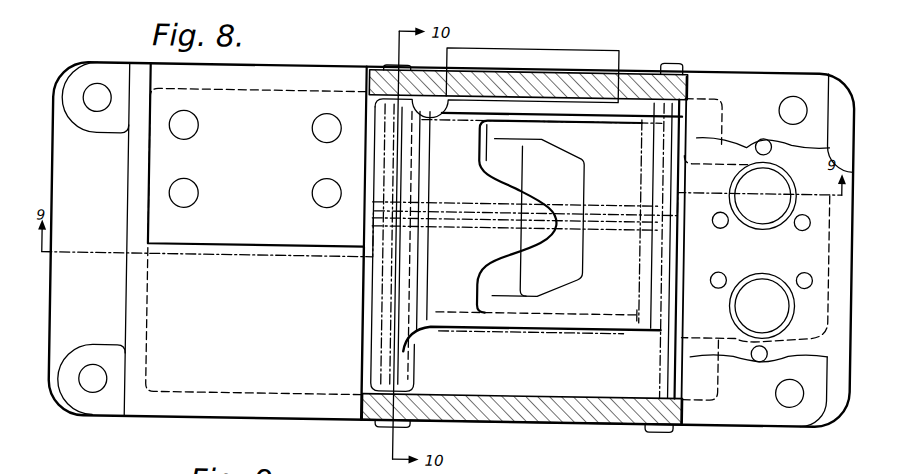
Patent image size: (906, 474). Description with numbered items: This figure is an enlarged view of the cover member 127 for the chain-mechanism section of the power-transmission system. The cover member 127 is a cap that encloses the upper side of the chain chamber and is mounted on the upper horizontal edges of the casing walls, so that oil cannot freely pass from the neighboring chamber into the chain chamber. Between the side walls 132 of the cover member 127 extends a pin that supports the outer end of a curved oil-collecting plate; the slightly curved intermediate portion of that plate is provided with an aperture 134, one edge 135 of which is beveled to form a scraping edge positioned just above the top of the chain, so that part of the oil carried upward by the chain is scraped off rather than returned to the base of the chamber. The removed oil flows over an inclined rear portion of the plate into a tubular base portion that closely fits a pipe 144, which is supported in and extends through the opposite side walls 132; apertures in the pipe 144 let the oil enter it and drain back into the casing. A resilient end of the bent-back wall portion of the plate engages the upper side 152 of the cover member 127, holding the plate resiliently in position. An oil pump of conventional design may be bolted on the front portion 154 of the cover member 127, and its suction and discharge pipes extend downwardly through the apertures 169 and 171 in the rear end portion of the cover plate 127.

The cover member 127 is at (714, 411).
The side walls 132 is at (636, 79).
The aperture 134 is at (567, 274).
The edge 135 is at (525, 266).
The pipe 144 is at (412, 366).
The upper side 152 is at (523, 260).
The front portion 154 is at (257, 154).
The aperture 169 is at (778, 305).
The aperture 171 is at (758, 217).